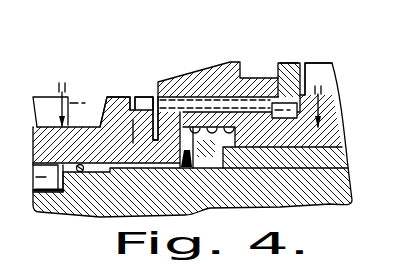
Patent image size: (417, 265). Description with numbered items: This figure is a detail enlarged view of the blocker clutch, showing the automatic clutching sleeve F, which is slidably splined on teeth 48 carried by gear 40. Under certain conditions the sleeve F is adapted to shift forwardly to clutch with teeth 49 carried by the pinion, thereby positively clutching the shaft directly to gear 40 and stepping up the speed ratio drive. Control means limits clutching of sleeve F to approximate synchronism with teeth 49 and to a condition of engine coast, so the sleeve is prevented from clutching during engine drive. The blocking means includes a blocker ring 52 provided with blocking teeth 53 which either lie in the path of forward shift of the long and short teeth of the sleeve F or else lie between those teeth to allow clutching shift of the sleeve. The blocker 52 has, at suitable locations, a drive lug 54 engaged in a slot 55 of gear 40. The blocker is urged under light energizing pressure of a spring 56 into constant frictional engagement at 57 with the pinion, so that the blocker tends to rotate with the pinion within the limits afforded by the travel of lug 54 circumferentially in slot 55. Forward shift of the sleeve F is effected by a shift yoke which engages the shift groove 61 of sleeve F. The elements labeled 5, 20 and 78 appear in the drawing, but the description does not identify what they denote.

The housing body 5 is at (204, 139).
The base 20 is at (328, 188).
The gauge block 78 is at (43, 100).
The teeth 49 is at (115, 100).
The blocking teeth 53 is at (143, 100).
The drive lug 54 is at (160, 125).
The slot 55 is at (181, 150).
The shift groove 61 is at (238, 100).
The teeth 48 is at (252, 100).
The automatic clutching sleeve F is at (290, 63).
The gear 40 is at (320, 70).
The spring 56 is at (242, 122).
The frictional engagement 57 is at (155, 125).
The blocker ring 52 is at (157, 137).